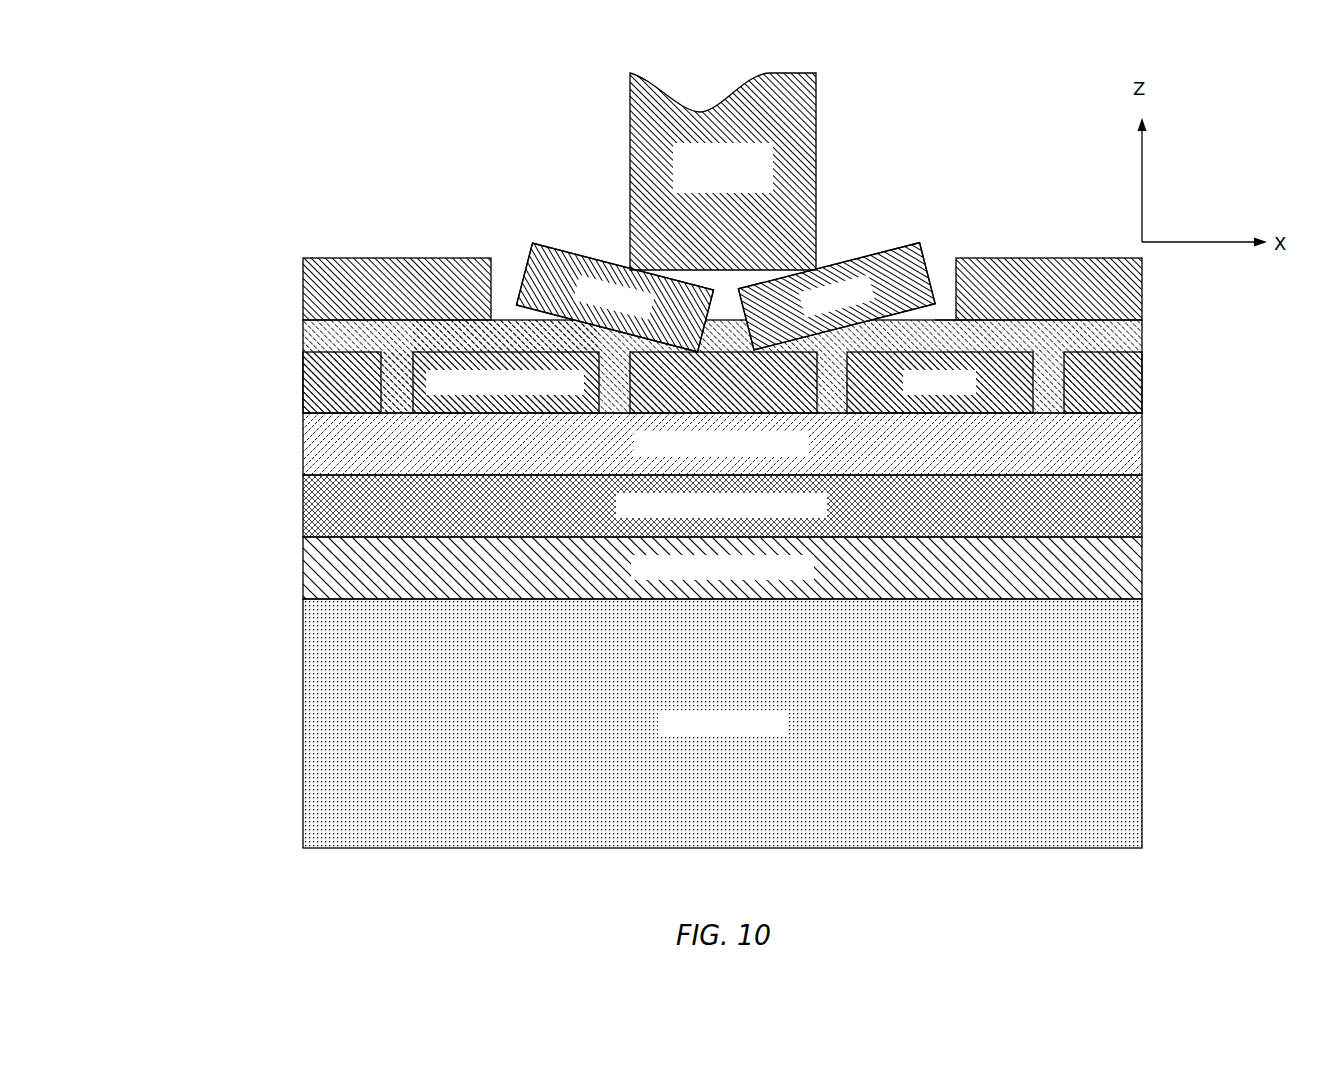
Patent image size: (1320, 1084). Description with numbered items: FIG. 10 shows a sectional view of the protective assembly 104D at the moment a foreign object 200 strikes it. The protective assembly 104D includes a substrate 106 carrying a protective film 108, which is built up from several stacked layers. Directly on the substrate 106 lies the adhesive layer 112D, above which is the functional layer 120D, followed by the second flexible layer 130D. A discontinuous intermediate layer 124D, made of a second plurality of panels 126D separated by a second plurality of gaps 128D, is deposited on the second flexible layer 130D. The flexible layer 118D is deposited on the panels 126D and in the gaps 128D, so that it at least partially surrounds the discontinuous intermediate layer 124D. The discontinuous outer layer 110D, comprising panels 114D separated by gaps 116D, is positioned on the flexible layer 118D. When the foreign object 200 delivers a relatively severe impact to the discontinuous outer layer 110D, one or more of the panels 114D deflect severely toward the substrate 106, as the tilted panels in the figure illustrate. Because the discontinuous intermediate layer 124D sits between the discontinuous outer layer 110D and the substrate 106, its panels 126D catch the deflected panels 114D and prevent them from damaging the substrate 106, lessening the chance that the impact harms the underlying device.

The protective assembly 104D is at (682, 478).
The substrate 106 is at (766, 723).
The protective film 108 is at (682, 357).
The discontinuous outer layer 110D is at (773, 294).
The adhesive layer 112D is at (743, 571).
The panels 114D is at (947, 118).
The gaps 116D is at (980, 268).
The flexible layer 118D is at (773, 366).
The functional layer 120D is at (773, 509).
The discontinuous intermediate layer 124D is at (773, 387).
The panels 126D is at (502, 261).
The gaps 128D is at (361, 314).
The second flexible layer 130D is at (742, 448).
The foreign object 200 is at (679, 171).